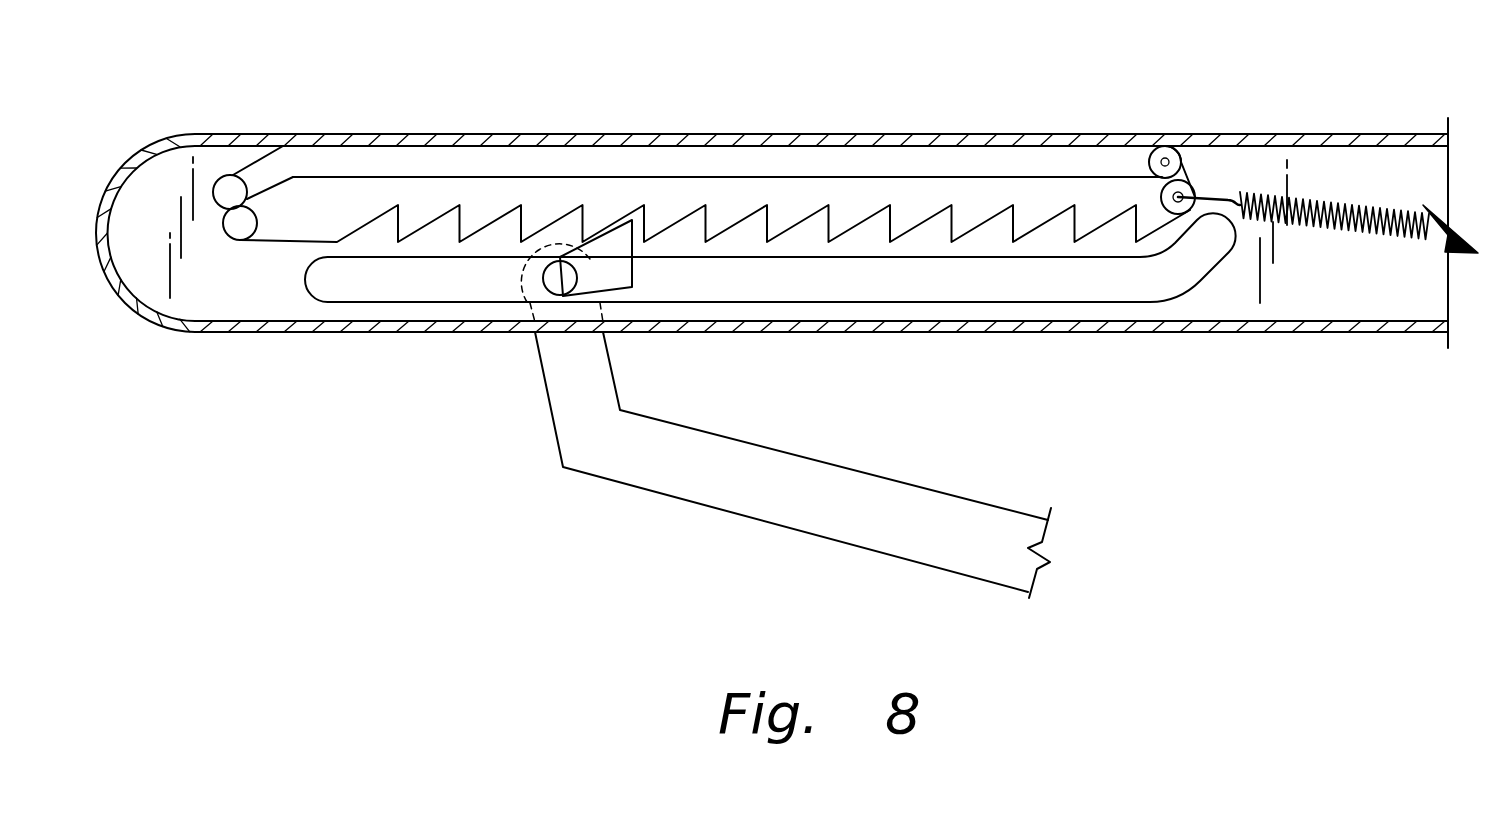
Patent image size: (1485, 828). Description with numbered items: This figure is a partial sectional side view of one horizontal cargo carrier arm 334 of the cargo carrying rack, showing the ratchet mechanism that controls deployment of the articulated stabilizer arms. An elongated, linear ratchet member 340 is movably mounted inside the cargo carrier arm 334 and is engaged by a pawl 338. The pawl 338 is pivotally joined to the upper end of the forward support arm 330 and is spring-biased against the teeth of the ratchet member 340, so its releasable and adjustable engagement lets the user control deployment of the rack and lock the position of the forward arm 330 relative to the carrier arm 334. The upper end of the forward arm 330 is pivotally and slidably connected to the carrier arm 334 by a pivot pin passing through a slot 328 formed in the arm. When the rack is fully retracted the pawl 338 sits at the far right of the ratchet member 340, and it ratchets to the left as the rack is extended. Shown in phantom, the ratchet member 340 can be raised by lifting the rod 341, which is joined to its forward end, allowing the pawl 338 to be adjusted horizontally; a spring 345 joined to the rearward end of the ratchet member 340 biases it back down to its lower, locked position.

The horizontal cargo carrier arm 334 is at (1012, 137).
The ratchet member 340 is at (1057, 192).
The rod 341 is at (235, 233).
The pawl 338 is at (617, 272).
The slot 328 is at (1070, 302).
The forward support arm 330 is at (622, 462).
The spring 345 is at (1395, 235).